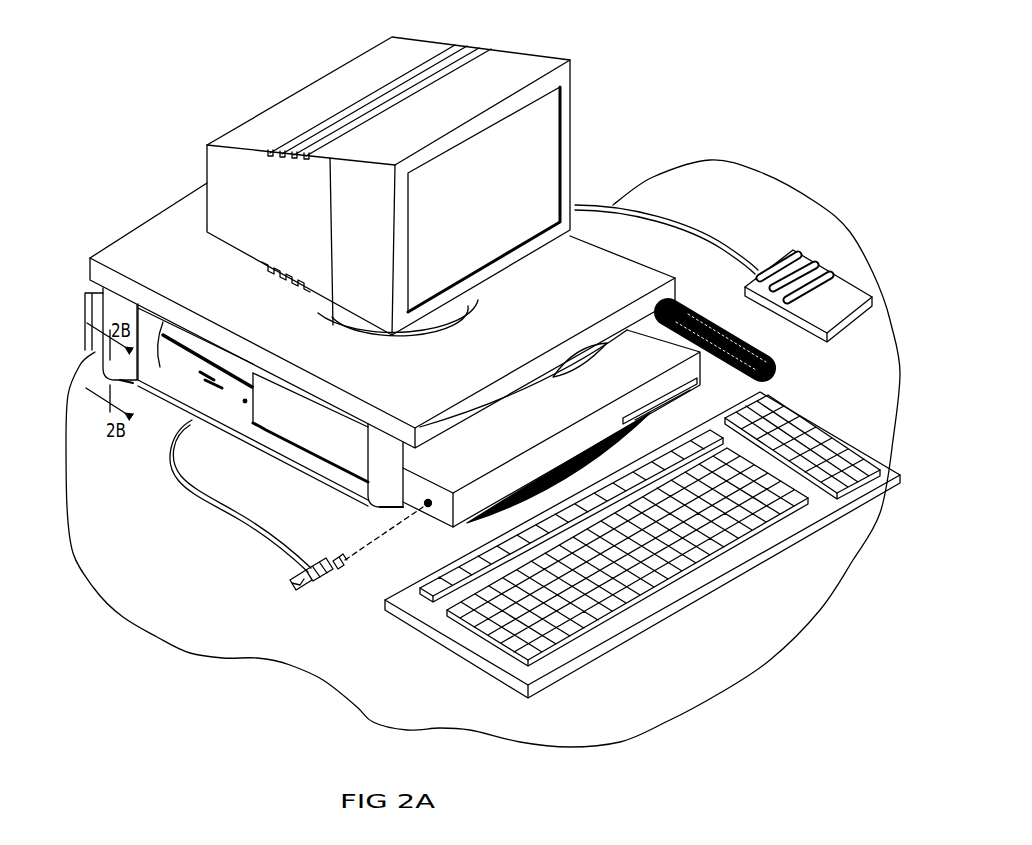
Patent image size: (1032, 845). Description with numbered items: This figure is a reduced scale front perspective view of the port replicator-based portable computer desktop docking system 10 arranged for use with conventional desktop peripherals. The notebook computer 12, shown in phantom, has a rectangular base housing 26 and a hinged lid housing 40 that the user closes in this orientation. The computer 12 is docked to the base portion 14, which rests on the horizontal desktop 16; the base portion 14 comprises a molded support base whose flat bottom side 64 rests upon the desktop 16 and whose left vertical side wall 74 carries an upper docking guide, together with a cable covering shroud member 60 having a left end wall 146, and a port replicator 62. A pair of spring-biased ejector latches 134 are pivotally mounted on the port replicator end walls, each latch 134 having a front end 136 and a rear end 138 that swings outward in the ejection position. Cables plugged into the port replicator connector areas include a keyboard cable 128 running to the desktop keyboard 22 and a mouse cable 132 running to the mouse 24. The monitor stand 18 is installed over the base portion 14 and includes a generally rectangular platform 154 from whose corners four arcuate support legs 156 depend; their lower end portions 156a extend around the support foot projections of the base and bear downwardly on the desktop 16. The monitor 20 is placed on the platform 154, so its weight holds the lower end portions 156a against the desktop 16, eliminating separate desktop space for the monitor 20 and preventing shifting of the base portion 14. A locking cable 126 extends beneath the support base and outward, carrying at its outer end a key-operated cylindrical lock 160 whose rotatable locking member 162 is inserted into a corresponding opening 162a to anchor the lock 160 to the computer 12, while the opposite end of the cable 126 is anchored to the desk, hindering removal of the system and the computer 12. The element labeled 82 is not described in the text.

The portable computer desktop docking system 10 is at (140, 193).
The notebook computer 12 is at (612, 390).
The base portion 14 is at (300, 473).
The desktop 16 is at (644, 706).
The monitor stand portion 18 is at (614, 282).
The monitor 20 is at (545, 46).
The keyboard 22 is at (435, 642).
The mouse 24 is at (806, 333).
The base housing 26 is at (362, 474).
The lid housing 40 is at (353, 460).
The cable covering shroud member 60 is at (88, 297).
The port replicator 62 is at (243, 367).
The flat bottom side 64 is at (227, 446).
The left vertical side wall 74 is at (285, 460).
The slot 82 is at (583, 458).
The locking cable 126 is at (237, 519).
The keyboard cable 128 is at (708, 323).
The mouse cable 132 is at (693, 218).
The ejector latch 134 is at (193, 367).
The front end of ejector latch 136 is at (285, 363).
The rear end of ejector latch 138 is at (192, 309).
The left end wall of shroud member 146 is at (170, 389).
The platform 154 is at (573, 319).
The support leg 156 is at (128, 302).
The lower end portion of support leg 156a is at (127, 387).
The key-operated cylindrical lock 160 is at (322, 574).
The rotatable locking member 162 is at (343, 560).
The opening 162a is at (431, 501).